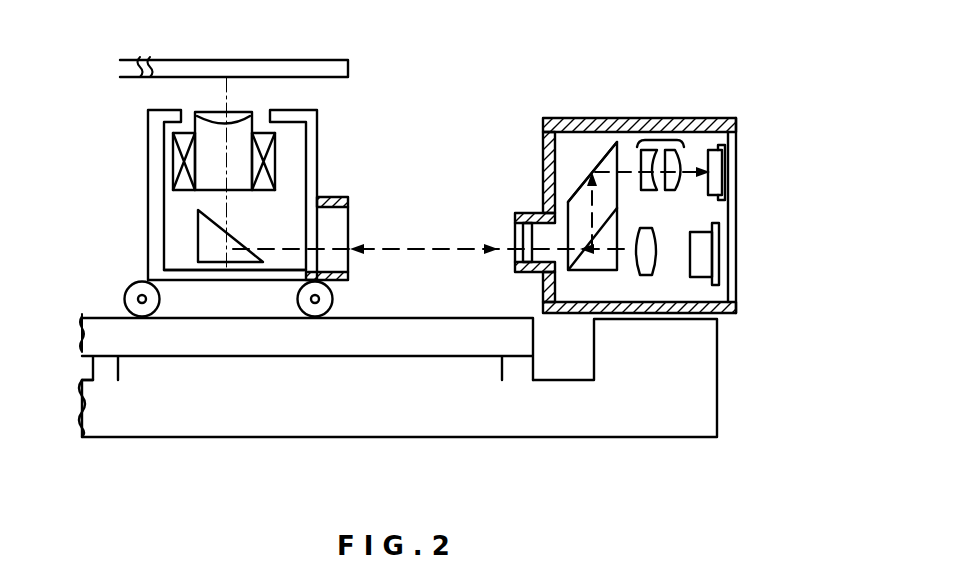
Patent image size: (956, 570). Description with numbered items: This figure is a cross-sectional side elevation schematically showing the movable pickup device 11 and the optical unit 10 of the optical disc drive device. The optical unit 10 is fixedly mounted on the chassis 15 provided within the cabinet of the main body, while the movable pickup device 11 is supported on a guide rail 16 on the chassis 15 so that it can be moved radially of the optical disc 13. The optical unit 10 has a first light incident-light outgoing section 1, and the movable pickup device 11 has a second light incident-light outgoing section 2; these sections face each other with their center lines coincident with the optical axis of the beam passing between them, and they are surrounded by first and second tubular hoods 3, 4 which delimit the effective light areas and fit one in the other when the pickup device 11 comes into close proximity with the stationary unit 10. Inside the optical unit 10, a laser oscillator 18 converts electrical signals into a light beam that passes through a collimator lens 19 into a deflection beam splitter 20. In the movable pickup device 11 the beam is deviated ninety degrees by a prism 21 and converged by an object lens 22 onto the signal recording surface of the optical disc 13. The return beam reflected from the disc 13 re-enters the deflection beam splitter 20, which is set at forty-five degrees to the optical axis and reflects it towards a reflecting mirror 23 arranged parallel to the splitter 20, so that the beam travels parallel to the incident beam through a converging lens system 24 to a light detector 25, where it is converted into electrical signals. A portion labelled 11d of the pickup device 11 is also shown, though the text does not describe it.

The first light incident-light outgoing section 1 is at (506, 229).
The second light incident-light outgoing section 2 is at (322, 229).
The first tubular hood 3 is at (517, 215).
The second tubular hood 4 is at (327, 197).
The optical unit 10 is at (695, 118).
The movable pickup device 11 is at (300, 110).
The housing bottom plate 11d is at (310, 258).
The optical disc 13 is at (167, 77).
The chassis 15 is at (703, 398).
The guide rail 16 is at (177, 342).
The laser oscillator 18 is at (703, 263).
The collimator lens 19 is at (647, 262).
The deflection beam splitter 20 is at (605, 273).
The prism 21 is at (207, 242).
The object lens 22 is at (195, 137).
The reflecting mirror 23 is at (608, 150).
The converging lens system 24 is at (663, 140).
The light detector 25 is at (735, 155).